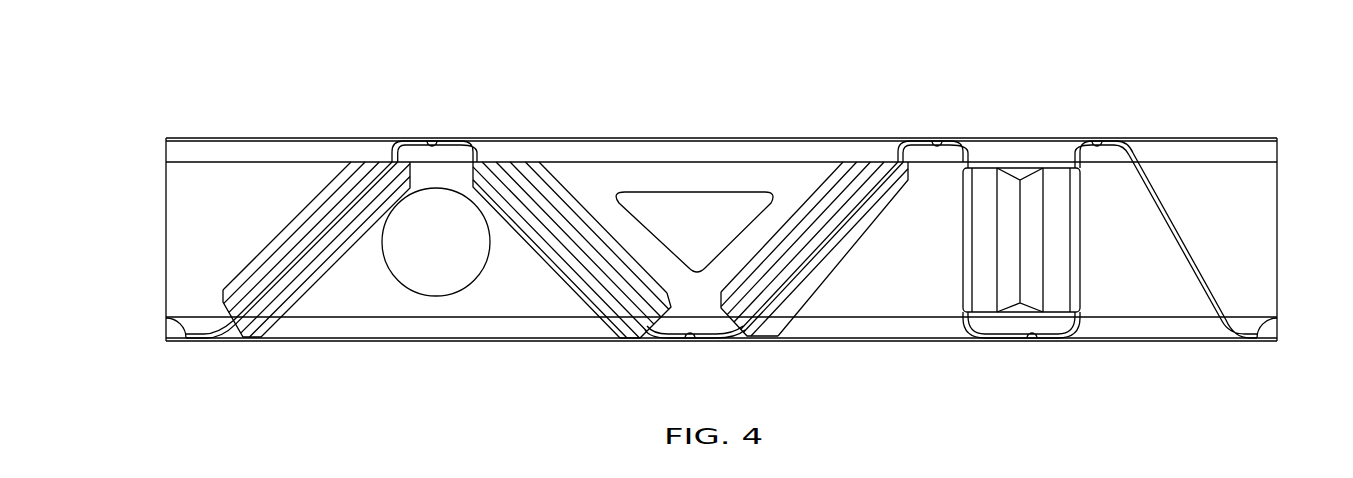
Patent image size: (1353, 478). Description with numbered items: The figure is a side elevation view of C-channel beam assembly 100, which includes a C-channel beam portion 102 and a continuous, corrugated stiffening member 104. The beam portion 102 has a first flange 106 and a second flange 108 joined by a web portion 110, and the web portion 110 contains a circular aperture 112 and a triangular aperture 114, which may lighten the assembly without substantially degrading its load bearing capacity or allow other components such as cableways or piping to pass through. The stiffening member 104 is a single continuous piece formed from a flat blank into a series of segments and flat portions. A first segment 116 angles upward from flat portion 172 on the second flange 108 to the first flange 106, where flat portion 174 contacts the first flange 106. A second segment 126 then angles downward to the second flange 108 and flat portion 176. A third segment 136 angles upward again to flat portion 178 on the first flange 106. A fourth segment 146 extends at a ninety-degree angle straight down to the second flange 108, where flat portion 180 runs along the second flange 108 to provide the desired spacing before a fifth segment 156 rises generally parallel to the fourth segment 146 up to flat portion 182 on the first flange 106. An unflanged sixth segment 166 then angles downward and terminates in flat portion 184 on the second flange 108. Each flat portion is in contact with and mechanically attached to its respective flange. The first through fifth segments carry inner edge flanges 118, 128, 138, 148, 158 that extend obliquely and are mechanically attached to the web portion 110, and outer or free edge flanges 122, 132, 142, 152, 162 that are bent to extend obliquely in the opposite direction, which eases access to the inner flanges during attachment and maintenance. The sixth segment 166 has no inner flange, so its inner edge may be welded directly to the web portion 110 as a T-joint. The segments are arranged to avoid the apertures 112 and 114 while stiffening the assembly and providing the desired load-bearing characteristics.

The C-channel beam assembly 100 is at (172, 110).
The C-channel beam portion 102 is at (277, 137).
The stiffening member 104 is at (518, 190).
The first flange 106 is at (642, 132).
The second flange 108 is at (455, 352).
The web portion 110 is at (227, 224).
The circular aperture 112 is at (395, 265).
The triangular aperture 114 is at (663, 243).
The first segment 116 is at (298, 199).
The inner edge flange 118 is at (236, 279).
The outer edge flange 122 is at (326, 279).
The second segment 126 is at (535, 274).
The inner edge flange 128 is at (568, 182).
The outer edge flange 132 is at (566, 292).
The third segment 136 is at (828, 292).
The inner edge flange 138 is at (806, 190).
The outer edge flange 142 is at (870, 243).
The fourth segment 146 is at (958, 296).
The inner edge flange 148 is at (1005, 168).
The outer edge flange 152 is at (961, 238).
The fifth segment 156 is at (1092, 272).
The inner edge flange 158 is at (1037, 168).
The outer edge flange 162 is at (1081, 222).
The sixth segment 166 is at (1188, 283).
The flat portion 172 is at (186, 333).
The flat portion 174 is at (430, 148).
The flat portion 176 is at (697, 340).
The flat portion 178 is at (935, 148).
The flat portion 180 is at (1034, 340).
The flat portion 182 is at (1097, 148).
The flat portion 184 is at (1258, 333).